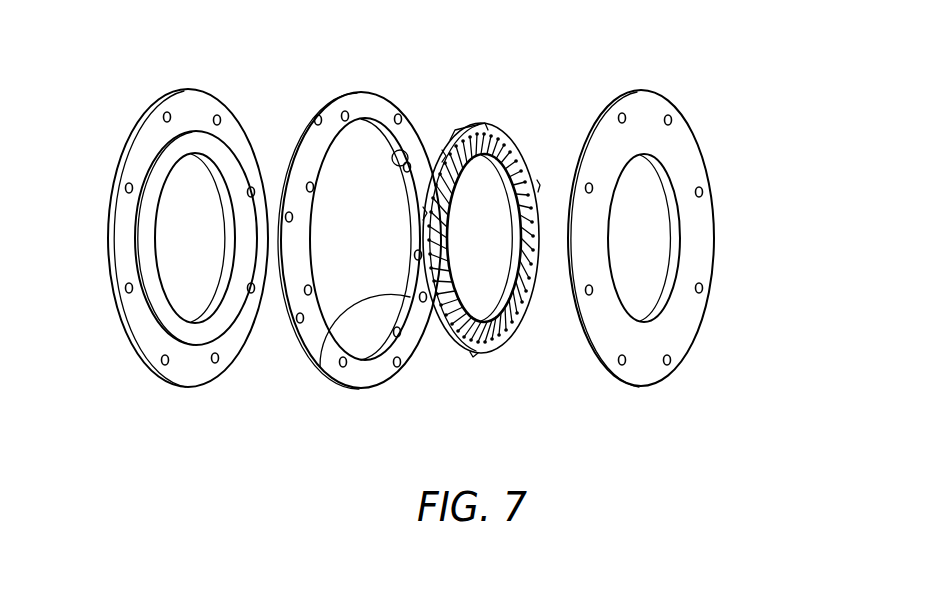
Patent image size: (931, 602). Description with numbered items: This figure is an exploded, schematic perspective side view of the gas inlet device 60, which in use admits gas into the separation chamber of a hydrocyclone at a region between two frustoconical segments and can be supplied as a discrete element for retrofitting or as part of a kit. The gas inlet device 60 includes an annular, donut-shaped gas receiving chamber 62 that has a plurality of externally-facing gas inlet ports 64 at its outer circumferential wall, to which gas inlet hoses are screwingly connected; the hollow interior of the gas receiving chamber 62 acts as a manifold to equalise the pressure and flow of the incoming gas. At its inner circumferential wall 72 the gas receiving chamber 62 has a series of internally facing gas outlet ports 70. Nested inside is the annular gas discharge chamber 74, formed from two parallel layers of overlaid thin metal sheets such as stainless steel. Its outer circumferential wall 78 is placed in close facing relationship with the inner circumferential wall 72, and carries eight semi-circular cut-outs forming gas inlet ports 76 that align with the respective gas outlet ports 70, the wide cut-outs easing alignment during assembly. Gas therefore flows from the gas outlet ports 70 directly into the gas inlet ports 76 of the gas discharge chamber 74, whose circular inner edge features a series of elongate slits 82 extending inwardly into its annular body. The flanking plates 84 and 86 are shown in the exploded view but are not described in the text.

The gas inlet device 60 is at (718, 83).
The gas receiving chamber 62 is at (366, 236).
The gas inlet ports 64 is at (318, 116).
The gas outlet ports 70 is at (408, 150).
The inner circumferential wall 72 is at (320, 367).
The gas discharge chamber 74 is at (498, 246).
The gas inlet ports 76 is at (520, 333).
The outer circumferential wall 78 is at (492, 357).
The elongate slits 82 is at (517, 147).
The left flange 84 is at (183, 362).
The right flange 86 is at (673, 347).